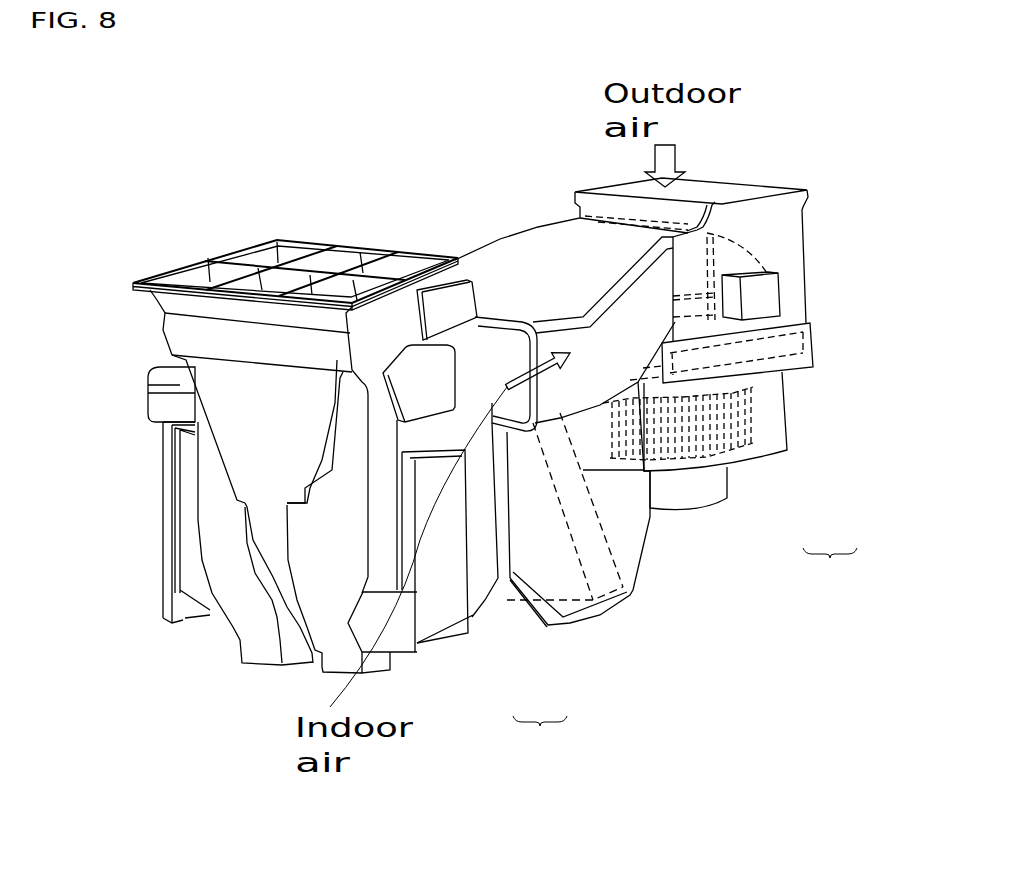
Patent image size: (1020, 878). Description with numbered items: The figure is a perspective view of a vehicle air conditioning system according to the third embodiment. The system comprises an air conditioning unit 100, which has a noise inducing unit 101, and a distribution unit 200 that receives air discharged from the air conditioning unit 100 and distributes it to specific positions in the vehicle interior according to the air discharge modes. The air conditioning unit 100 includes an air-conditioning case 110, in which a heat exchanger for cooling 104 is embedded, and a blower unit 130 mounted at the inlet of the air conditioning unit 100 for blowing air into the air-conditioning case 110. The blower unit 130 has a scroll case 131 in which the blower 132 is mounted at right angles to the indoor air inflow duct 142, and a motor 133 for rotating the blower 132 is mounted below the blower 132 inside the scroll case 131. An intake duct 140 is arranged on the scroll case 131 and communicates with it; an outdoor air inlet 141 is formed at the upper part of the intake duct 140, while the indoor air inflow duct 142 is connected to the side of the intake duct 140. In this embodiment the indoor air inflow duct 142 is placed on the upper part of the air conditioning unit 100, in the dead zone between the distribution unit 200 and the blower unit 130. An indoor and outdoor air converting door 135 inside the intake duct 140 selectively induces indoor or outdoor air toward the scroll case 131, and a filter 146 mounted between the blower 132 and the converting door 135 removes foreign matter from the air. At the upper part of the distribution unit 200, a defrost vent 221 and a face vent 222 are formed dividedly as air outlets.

The air conditioning unit 100 is at (658, 570).
The noise inducing unit 101 is at (685, 649).
The heat exchanger for cooling 104 is at (563, 613).
The air-conditioning case 110 is at (610, 617).
The blower unit 130 is at (790, 457).
The scroll case 131 is at (786, 403).
The blower 132 is at (755, 440).
The motor 133 is at (700, 500).
The indoor and outdoor air converting door 135 is at (747, 247).
The intake duct 140 is at (807, 282).
The outdoor air inlet 141 is at (733, 190).
The indoor air inflow duct 142 is at (508, 262).
The filter 146 is at (790, 353).
The distribution unit 200 is at (158, 338).
The defrost vent 221 is at (300, 255).
The face vent 222 is at (187, 275).